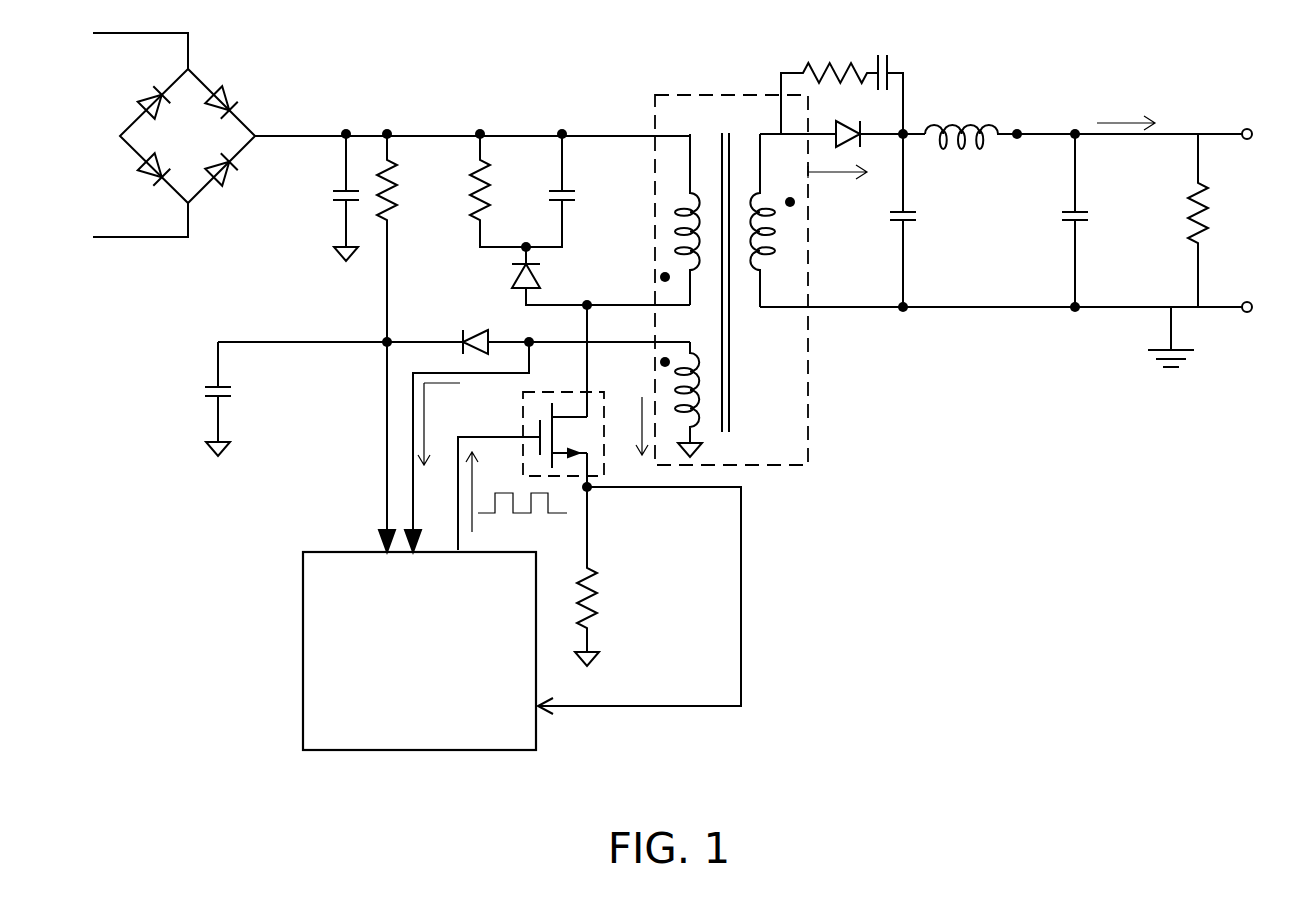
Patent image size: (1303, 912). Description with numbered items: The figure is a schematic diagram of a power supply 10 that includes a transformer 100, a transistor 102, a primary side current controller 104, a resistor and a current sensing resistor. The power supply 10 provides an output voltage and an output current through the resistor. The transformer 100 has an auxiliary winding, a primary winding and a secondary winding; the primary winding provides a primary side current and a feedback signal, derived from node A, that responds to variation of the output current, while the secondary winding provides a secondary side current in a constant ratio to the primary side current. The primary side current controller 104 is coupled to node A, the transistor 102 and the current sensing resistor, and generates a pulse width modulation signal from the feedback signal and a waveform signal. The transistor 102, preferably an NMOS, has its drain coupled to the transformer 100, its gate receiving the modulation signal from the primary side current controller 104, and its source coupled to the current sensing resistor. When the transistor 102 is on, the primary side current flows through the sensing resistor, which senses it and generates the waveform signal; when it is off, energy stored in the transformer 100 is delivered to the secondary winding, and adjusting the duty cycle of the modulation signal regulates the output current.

The power supply 10 is at (1082, 607).
The transformer 100 is at (695, 93).
The transistor 102 is at (598, 392).
The primary side current controller 104 is at (333, 551).